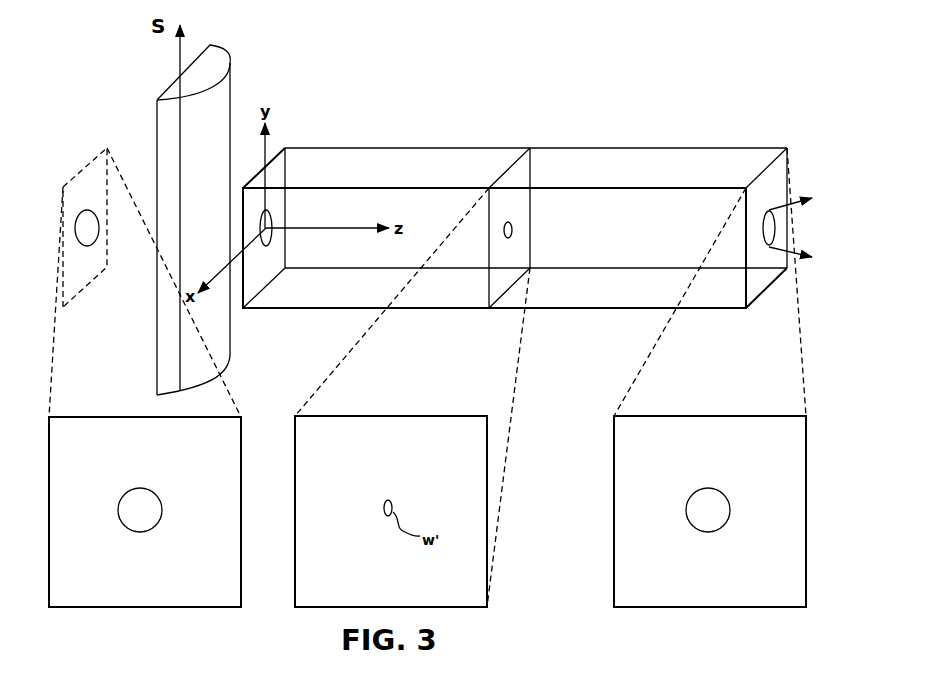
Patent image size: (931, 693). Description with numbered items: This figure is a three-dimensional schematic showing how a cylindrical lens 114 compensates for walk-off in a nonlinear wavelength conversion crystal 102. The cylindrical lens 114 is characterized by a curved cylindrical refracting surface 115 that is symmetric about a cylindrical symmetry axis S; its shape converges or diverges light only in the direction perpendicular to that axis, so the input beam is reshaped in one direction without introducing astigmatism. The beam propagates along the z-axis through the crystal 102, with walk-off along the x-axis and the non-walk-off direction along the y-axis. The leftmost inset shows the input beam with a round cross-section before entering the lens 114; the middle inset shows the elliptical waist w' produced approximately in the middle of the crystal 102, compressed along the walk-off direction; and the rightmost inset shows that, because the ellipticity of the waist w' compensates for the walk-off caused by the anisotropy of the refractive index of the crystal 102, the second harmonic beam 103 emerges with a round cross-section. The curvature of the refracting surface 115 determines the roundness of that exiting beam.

The nonlinear crystal 102 is at (475, 148).
The second harmonic beam 103 is at (808, 198).
The cylindrical lens 114 is at (227, 201).
The curved cylindrical refracting surface 115 is at (223, 103).